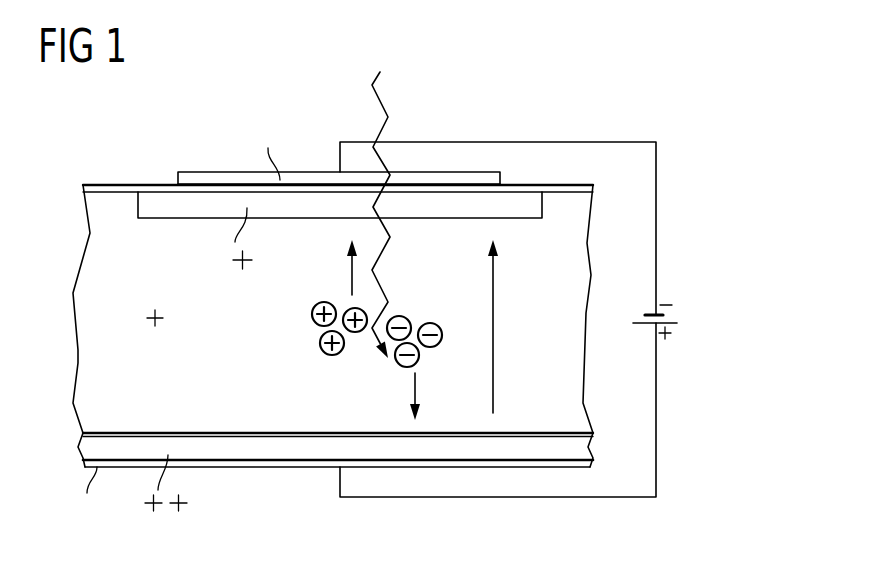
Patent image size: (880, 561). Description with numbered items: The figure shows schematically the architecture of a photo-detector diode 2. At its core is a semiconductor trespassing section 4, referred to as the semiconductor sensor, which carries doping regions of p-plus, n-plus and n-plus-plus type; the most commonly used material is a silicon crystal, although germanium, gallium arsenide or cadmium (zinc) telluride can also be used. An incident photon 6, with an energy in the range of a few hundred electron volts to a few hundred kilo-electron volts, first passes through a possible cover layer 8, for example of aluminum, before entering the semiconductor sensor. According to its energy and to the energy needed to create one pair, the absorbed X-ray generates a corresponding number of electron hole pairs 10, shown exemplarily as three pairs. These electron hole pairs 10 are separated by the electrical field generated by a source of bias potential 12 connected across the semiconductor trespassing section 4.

The photo-detector diode 2 is at (578, 114).
The semiconductor trespassing section 4 is at (85, 368).
The incident photon 6 is at (380, 100).
The cover layer 8 is at (210, 180).
The electron hole pairs 10 is at (396, 362).
The source of bias potential 12 is at (648, 317).